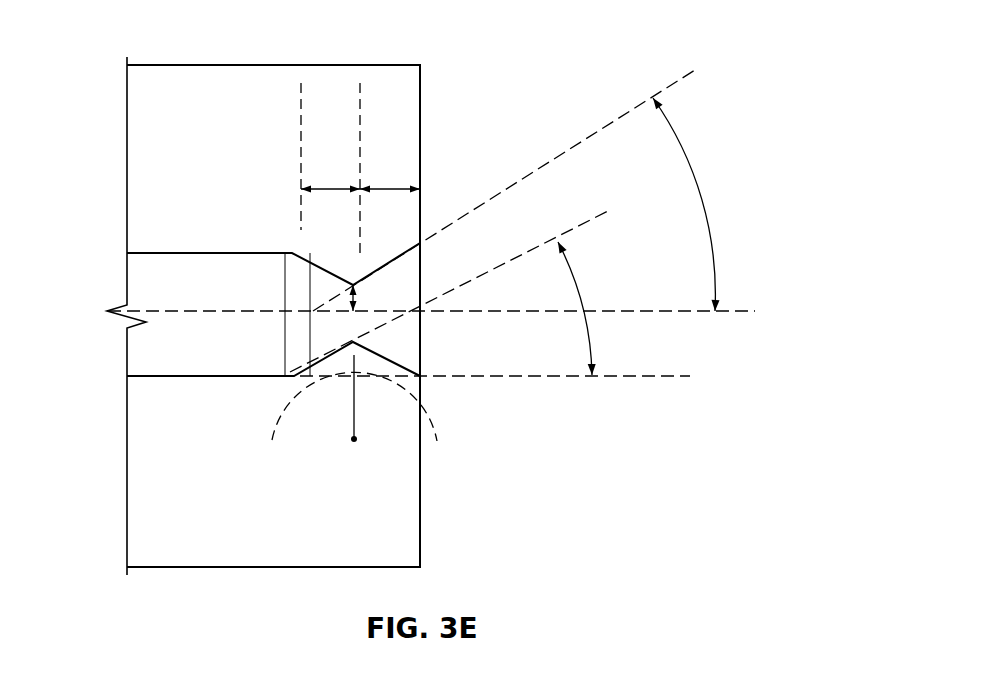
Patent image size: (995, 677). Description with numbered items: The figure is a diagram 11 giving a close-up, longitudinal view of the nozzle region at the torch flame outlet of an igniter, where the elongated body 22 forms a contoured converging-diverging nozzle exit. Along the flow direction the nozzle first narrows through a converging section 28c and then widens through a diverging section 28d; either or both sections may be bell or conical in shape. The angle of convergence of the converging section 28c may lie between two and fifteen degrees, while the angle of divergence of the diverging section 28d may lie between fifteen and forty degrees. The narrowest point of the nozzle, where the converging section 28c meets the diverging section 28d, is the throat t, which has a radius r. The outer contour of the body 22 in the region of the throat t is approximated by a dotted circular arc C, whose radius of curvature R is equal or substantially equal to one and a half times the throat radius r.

The diagram 11 is at (560, 30).
The elongated body 22 is at (176, 568).
The converging section 28c is at (337, 186).
The diverging section 28d is at (393, 186).
The nozzle throat t is at (350, 276).
The radius of the nozzle throat r is at (358, 293).
The circular arc C is at (272, 422).
The radius of curvature R is at (357, 407).